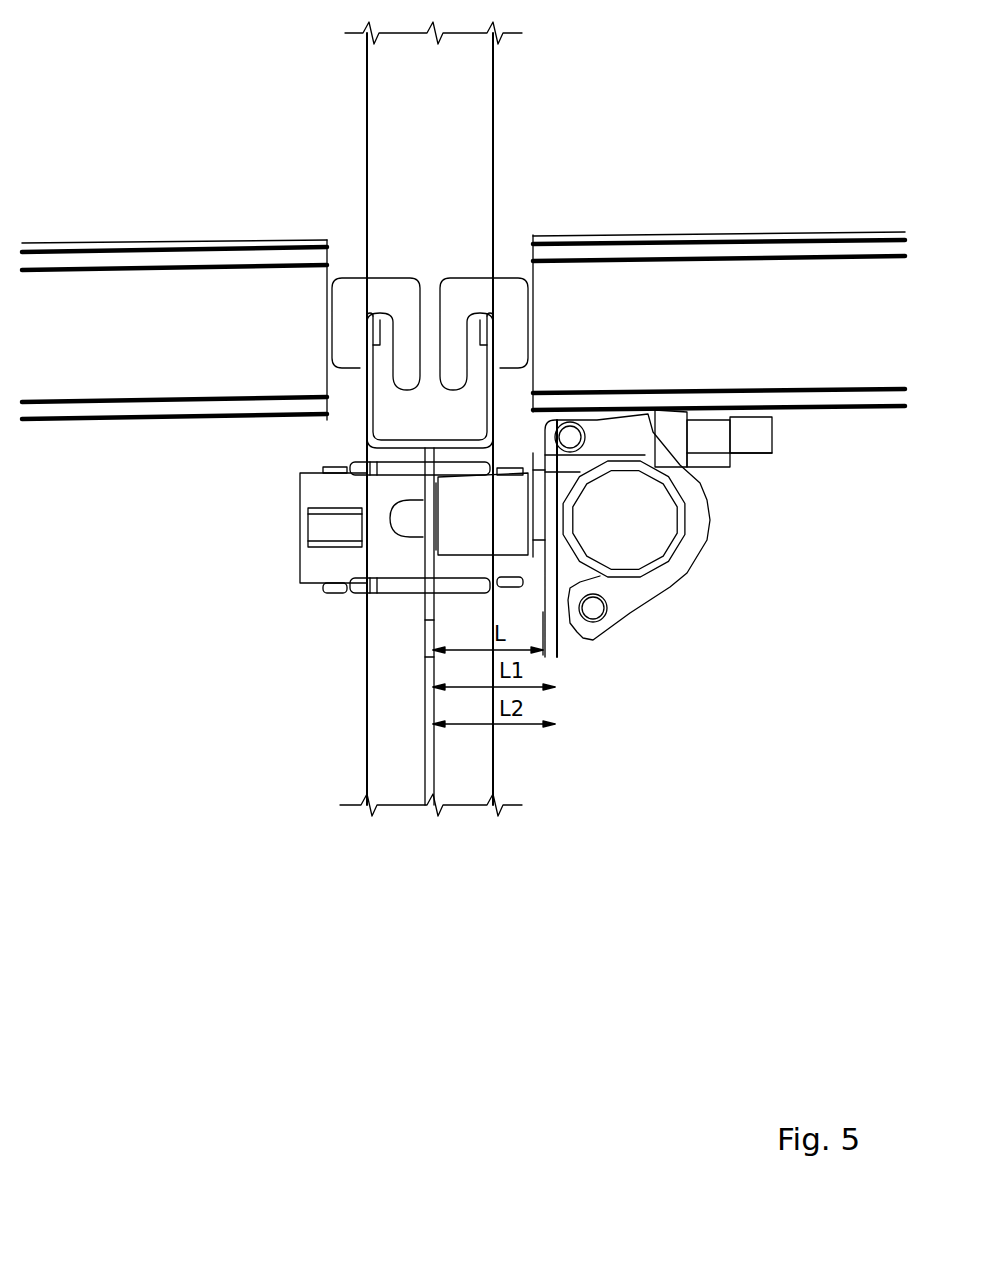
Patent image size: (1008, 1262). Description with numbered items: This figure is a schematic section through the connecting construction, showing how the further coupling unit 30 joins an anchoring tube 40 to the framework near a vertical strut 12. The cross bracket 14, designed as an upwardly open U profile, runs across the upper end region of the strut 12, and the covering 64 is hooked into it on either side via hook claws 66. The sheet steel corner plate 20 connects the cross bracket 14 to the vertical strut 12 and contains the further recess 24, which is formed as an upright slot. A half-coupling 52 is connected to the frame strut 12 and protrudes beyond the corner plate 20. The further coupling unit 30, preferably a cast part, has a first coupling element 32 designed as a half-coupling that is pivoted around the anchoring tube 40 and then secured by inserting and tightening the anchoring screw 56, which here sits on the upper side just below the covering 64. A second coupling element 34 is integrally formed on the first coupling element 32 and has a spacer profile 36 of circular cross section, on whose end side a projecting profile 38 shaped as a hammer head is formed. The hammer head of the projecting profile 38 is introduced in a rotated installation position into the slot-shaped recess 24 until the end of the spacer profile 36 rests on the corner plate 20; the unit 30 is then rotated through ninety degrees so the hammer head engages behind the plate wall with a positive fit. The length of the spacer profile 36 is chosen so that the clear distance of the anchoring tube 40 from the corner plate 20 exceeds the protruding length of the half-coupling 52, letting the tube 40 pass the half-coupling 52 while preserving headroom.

The vertical strut 12 is at (367, 419).
The cross bracket 14 is at (430, 286).
The sheet steel corner plate 20 is at (323, 626).
The further recess 24 is at (317, 528).
The further coupling unit 30 is at (685, 553).
The first coupling element 32 is at (684, 535).
The second coupling element 34 is at (289, 660).
The spacer profile 36 is at (370, 550).
The projecting profile 38 is at (367, 506).
The anchoring tube 40 is at (700, 517).
The half-coupling 52 is at (289, 528).
The anchoring screw 56 is at (692, 293).
The covering 64 is at (463, 270).
The hook claws 66 is at (422, 255).